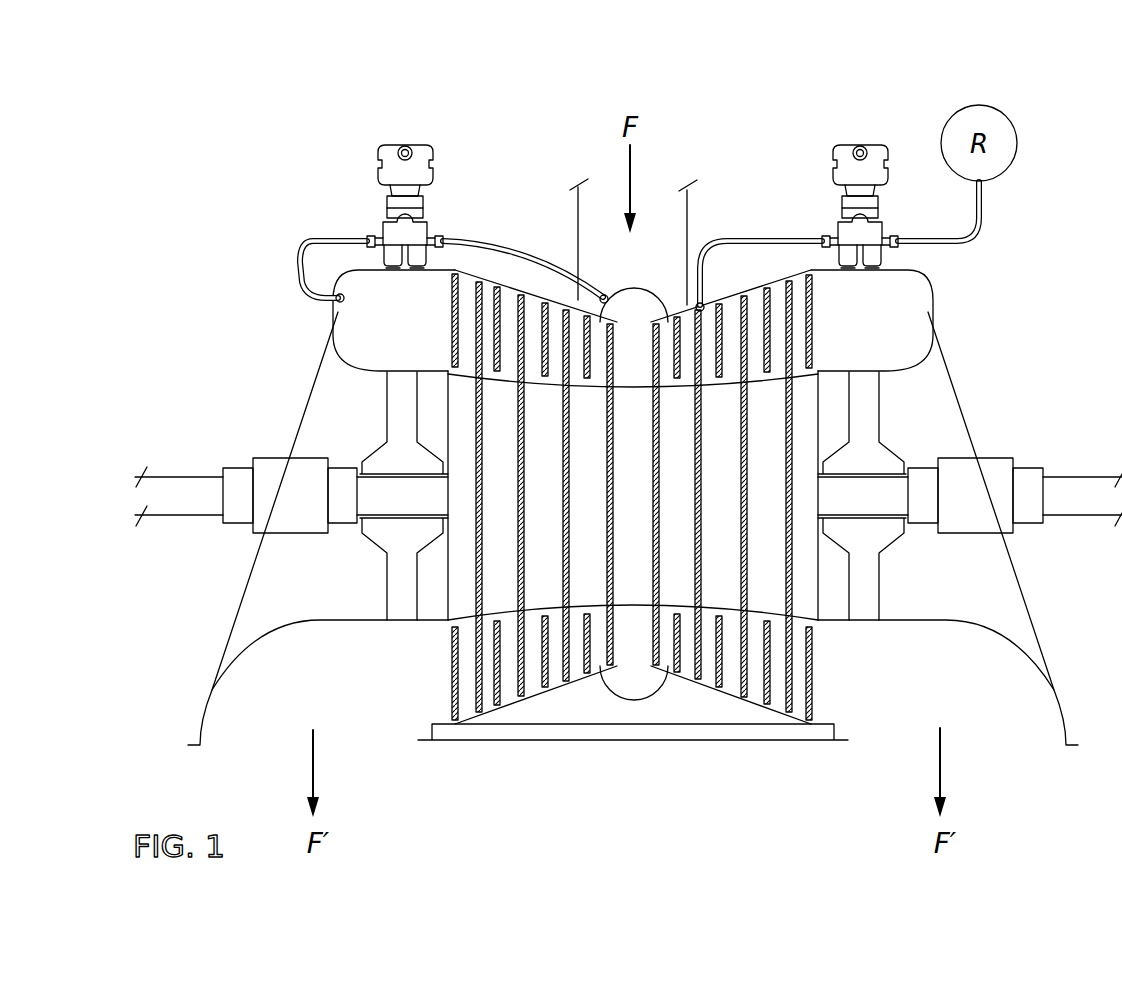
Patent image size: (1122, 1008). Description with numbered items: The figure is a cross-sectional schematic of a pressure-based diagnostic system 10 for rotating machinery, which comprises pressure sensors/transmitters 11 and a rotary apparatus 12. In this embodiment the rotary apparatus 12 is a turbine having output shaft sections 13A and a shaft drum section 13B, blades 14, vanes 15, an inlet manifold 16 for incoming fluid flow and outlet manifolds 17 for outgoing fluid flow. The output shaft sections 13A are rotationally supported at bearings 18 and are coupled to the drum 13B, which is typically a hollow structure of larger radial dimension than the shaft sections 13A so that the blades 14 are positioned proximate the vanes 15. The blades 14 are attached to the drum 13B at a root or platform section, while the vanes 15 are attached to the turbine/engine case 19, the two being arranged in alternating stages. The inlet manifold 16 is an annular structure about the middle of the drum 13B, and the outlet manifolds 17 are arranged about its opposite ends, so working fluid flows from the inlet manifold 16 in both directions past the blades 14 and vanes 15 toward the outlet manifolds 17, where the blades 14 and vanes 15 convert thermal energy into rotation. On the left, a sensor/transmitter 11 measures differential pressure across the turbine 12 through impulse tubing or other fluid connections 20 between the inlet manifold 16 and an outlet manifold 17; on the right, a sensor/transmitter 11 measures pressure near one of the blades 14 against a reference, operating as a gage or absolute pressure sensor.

The pressure-based diagnostic system 10 is at (206, 90).
The pressure sensor/transmitter 11 is at (390, 145).
The rotary apparatus 12 is at (214, 300).
The output shaft section 13A is at (274, 457).
The shaft drum section 13B is at (460, 606).
The blades 14 is at (778, 297).
The vanes 15 is at (745, 302).
The inlet manifold 16 is at (618, 330).
The outlet manifold 17 is at (384, 332).
The bearings 18 is at (385, 424).
The turbine/engine case 19 is at (486, 283).
The fluid connections 20 is at (303, 252).